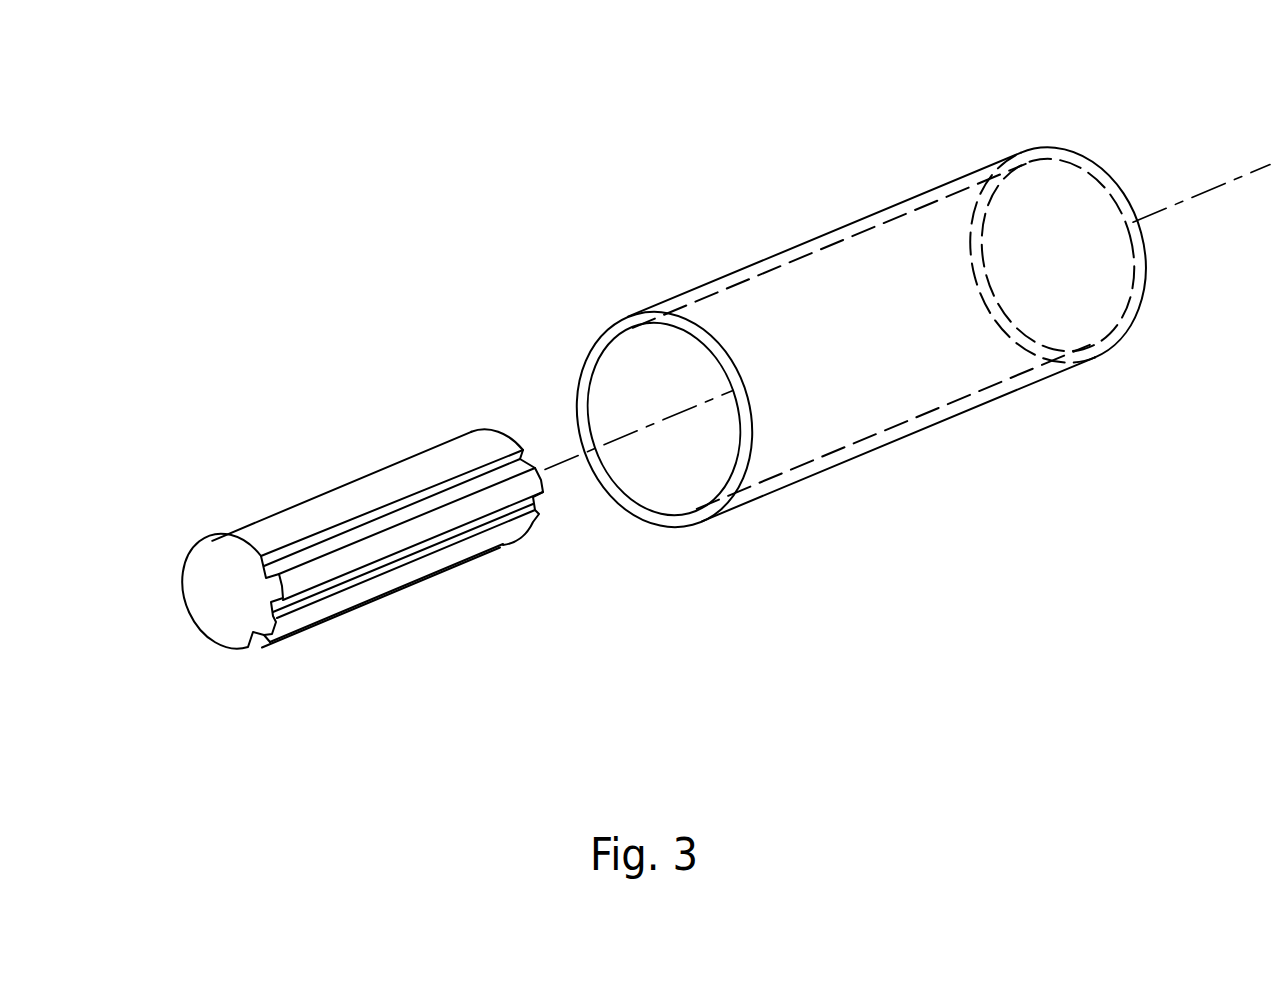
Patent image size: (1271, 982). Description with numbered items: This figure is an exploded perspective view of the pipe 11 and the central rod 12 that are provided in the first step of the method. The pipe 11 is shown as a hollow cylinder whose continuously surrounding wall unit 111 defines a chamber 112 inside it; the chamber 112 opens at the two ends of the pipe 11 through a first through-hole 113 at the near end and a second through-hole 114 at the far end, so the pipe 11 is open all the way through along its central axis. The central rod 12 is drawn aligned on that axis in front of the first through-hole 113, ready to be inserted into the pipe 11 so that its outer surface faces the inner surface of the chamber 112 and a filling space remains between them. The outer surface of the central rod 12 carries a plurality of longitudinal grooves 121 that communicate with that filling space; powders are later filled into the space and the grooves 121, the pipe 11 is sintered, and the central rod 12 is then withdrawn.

The pipe 11 is at (870, 321).
The wall unit 111 is at (637, 318).
The chamber 112 is at (683, 437).
The first through-hole 113 is at (612, 372).
The second through-hole 114 is at (1040, 183).
The central rod 12 is at (362, 537).
The grooves 121 is at (293, 562).